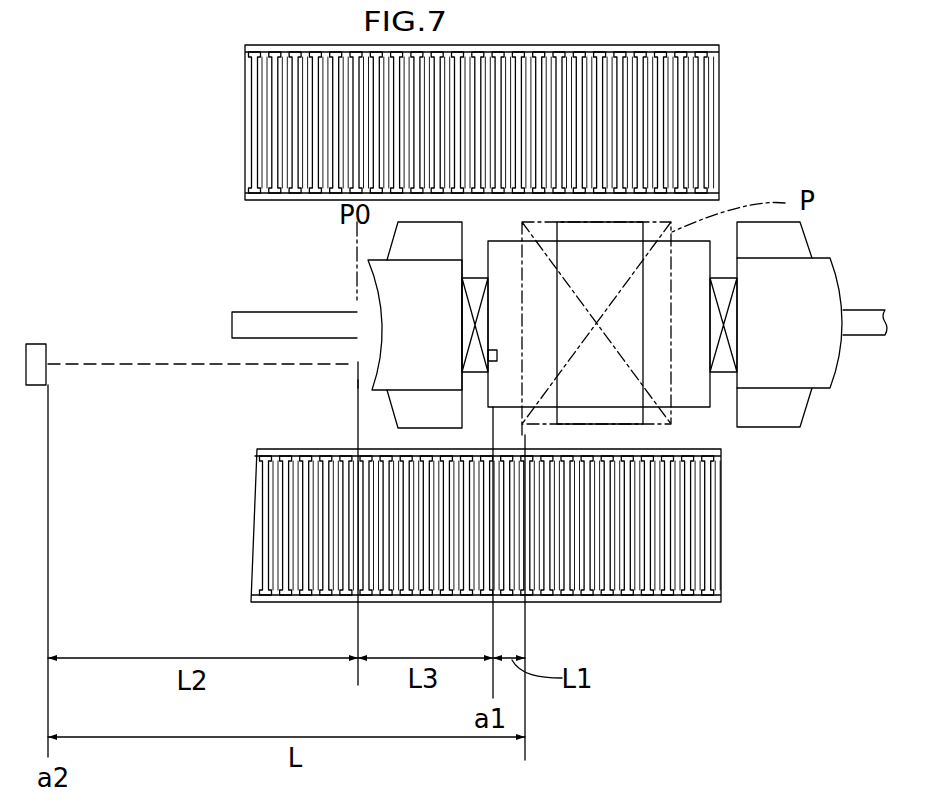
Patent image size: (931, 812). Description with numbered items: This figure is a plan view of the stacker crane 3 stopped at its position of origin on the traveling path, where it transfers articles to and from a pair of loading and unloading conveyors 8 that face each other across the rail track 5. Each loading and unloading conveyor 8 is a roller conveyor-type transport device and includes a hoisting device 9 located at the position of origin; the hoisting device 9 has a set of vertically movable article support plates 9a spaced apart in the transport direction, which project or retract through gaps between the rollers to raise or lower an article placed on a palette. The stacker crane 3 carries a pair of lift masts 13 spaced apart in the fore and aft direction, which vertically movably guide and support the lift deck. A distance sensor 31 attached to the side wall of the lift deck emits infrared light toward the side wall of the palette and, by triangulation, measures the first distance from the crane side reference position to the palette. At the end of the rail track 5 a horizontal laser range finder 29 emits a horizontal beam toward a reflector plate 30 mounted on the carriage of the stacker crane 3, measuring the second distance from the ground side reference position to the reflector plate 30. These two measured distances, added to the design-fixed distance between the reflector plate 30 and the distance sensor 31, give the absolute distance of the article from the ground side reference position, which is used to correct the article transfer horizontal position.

The stacker crane 3 is at (826, 410).
The rail track 5 is at (317, 327).
The loading and unloading conveyor 8 is at (710, 133).
The hoisting device 9 is at (662, 90).
The article support plate 9a is at (542, 603).
The lift mast 13 is at (478, 318).
The horizontal laser range finder 29 is at (33, 347).
The reflector plate 30 is at (353, 370).
The distance sensor 31 is at (488, 355).